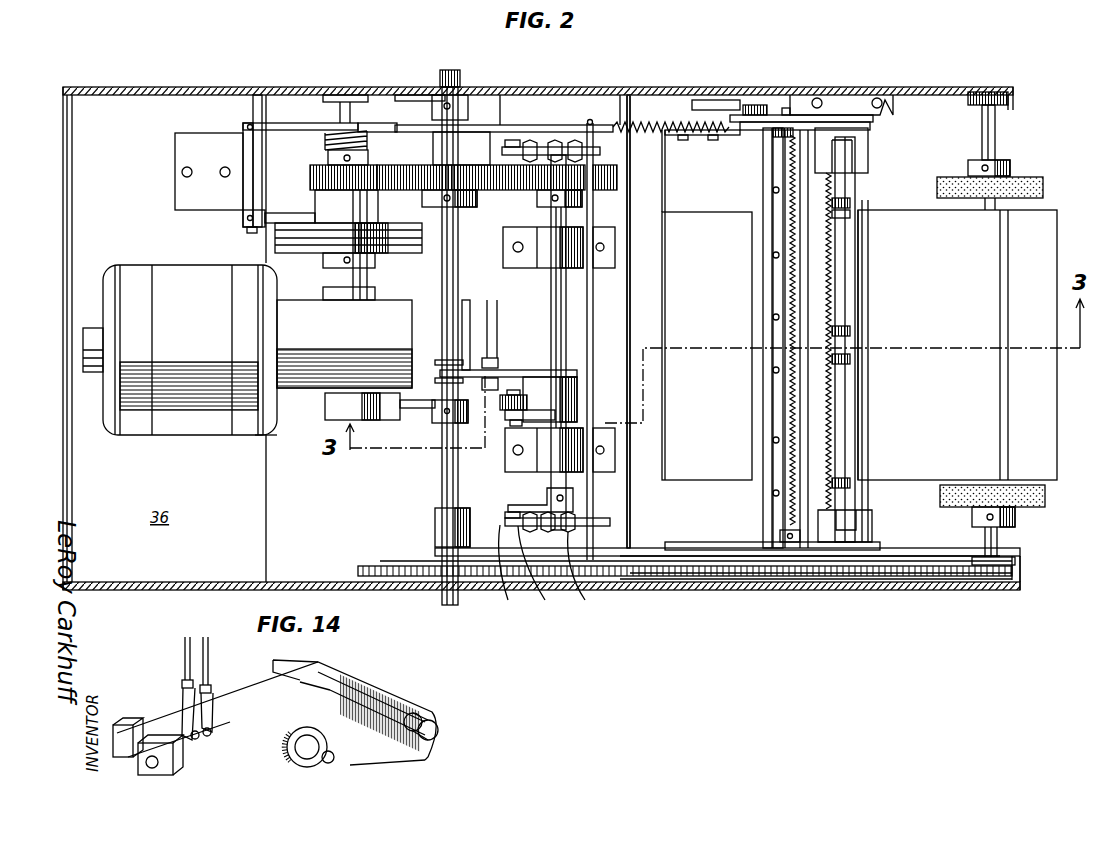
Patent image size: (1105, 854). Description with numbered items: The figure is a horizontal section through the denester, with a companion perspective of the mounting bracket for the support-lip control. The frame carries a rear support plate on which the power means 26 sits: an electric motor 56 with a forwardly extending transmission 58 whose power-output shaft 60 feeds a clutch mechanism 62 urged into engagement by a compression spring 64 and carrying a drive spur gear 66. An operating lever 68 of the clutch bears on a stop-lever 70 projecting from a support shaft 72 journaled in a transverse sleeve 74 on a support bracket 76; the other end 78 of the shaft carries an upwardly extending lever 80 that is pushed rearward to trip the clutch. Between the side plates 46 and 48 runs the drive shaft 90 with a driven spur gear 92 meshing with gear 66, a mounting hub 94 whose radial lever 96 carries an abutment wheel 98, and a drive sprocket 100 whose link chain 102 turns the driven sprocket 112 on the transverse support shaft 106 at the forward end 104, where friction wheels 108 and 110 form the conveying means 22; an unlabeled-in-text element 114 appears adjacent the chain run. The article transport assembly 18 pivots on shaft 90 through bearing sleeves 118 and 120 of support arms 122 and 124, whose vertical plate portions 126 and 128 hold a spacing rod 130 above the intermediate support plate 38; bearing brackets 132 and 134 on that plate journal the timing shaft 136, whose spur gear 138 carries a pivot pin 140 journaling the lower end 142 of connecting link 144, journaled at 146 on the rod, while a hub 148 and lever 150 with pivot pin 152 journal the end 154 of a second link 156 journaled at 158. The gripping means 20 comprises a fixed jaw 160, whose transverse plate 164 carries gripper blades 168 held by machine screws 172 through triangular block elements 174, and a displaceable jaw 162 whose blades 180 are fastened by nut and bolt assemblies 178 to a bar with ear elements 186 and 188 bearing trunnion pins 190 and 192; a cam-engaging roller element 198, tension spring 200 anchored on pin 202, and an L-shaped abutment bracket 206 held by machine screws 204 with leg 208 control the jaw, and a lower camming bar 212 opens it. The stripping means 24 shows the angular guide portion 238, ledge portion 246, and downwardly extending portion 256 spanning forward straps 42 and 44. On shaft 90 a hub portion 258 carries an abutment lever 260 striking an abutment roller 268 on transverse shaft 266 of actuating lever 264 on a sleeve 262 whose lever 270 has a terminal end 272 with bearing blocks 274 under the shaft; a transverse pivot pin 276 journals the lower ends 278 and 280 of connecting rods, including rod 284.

In FIG. 2, the article transport assembly 18 is at (680, 560).
In FIG. 2, the article gripping means 20 is at (868, 189).
In FIG. 2, the article conveying means 22 is at (1051, 190).
In FIG. 2, the article stripping means 24 is at (1066, 226).
In FIG. 2, the power means 26 is at (250, 440).
In FIG. 2, the intermediate support plate 38 is at (630, 200).
In FIG. 2, the forward support strap 42 is at (820, 98).
In FIG. 2, the forward support strap 44 is at (880, 98).
In FIG. 2, the support side plate 46 is at (640, 580).
In FIG. 2, the support side plate 48 is at (580, 95).
In FIG. 2, the electric motor 56 is at (180, 350).
In FIG. 2, the transmission 58 is at (344, 344).
In FIG. 2, the power-output shaft 60 is at (375, 266).
In FIG. 2, the clutch mechanism 62 is at (310, 248).
In FIG. 2, the compression spring 64 is at (367, 142).
In FIG. 2, the drive spur gear 66 is at (310, 175).
In FIG. 2, the operating lever 68 is at (290, 213).
In FIG. 2, the stop-lever 70 is at (243, 216).
In FIG. 2, the support shaft 72 is at (250, 234).
In FIG. 2, the transverse sleeve 74 is at (243, 148).
In FIG. 2, the support bracket 76 is at (197, 142).
In FIG. 2, the other end of shaft 78 is at (256, 95).
In FIG. 2, the upwardly extending lever 80 is at (298, 123).
In FIG. 2, the drive shaft 90 is at (450, 72).
In FIG. 2, the driven spur gear 92 is at (406, 190).
In FIG. 2, the mounting hub 94 is at (468, 105).
In FIG. 2, the radially extending lever 96 is at (410, 95).
In FIG. 2, the abutment wheel 98 is at (385, 132).
In FIG. 2, the drive sprocket 100 is at (408, 578).
In FIG. 2, the endless link chain 102 is at (708, 578).
In FIG. 2, the forward end of support frame 104 is at (1010, 98).
In FIG. 2, the transverse support shaft 106 is at (995, 130).
In FIG. 2, the friction wheel 108 is at (1010, 168).
In FIG. 2, the friction wheel 110 is at (1045, 497).
In FIG. 2, the driven sprocket 112 is at (1020, 556).
In FIG. 2, the rail 114 is at (665, 549).
In FIG. 2, the bearing sleeve 118 is at (435, 520).
In FIG. 2, the bearing sleeve 120 is at (440, 150).
In FIG. 2, the support arm 122 is at (738, 550).
In FIG. 2, the support arm 124 is at (545, 125).
In FIG. 2, the vertical plate portion 126 is at (650, 560).
In FIG. 2, the vertical plate portion 128 is at (628, 110).
In FIG. 2, the spacing rod 130 is at (593, 304).
In FIG. 2, the bearing bracket 132 is at (583, 456).
In FIG. 2, the bearing bracket 134 is at (552, 262).
In FIG. 2, the timing shaft 136 is at (566, 286).
In FIG. 14, the timing shaft 136 is at (432, 722).
In FIG. 2, the spur gear 138 is at (617, 177).
In FIG. 2, the pivot pin 140 is at (510, 175).
In FIG. 2, the lower end of connecting link 142 is at (512, 140).
In FIG. 2, the adjustable connecting link 144 is at (540, 140).
In FIG. 2, the link journal on rod 146 is at (600, 152).
In FIG. 2, the hub 148 is at (573, 500).
In FIG. 2, the radially extending lever 150 is at (515, 512).
In FIG. 2, the pivot pin 152 is at (541, 573).
In FIG. 2, the end of second connecting link 154 is at (514, 573).
In FIG. 2, the second adjustable connecting link 156 is at (584, 576).
In FIG. 2, the second link journal on rod 158 is at (610, 522).
In FIG. 2, the fixed gripping jaw 160 is at (876, 162).
In FIG. 2, the displaceable gripping jaw 162 is at (763, 185).
In FIG. 2, the transverse support plate 164 is at (868, 140).
In FIG. 2, the gripper blade 168 is at (855, 247).
In FIG. 2, the machine screw 172 is at (850, 216).
In FIG. 2, the triangular block element 174 is at (850, 203).
In FIG. 2, the nut and bolt assembly 178 is at (776, 370).
In FIG. 2, the gripping blade 180 is at (776, 255).
In FIG. 2, the support ear element 186 is at (807, 339).
In FIG. 2, the support ear element 188 is at (830, 520).
In FIG. 2, the trunnion pin 190 is at (788, 108).
In FIG. 2, the trunnion pin 192 is at (790, 556).
In FIG. 2, the cam-engaging roller element 198 is at (765, 105).
In FIG. 2, the tension spring 200 is at (655, 123).
In FIG. 2, the pin 202 is at (622, 132).
In FIG. 2, the machine screw 204 is at (690, 140).
In FIG. 2, the L-shaped abutment bracket 206 is at (718, 140).
In FIG. 2, the abutment leg 208 is at (748, 118).
In FIG. 2, the lower camming bar 212 is at (715, 100).
In FIG. 2, the angular guide portion 238 is at (663, 171).
In FIG. 2, the ledge portion 246 is at (840, 292).
In FIG. 2, the downwardly extending portion 256 is at (1050, 395).
In FIG. 2, the hub portion 258 is at (430, 412).
In FIG. 2, the abutment lever 260 is at (432, 412).
In FIG. 2, the sleeve 262 is at (577, 390).
In FIG. 14, the sleeve 262 is at (370, 690).
In FIG. 2, the actuating lever 264 is at (550, 420).
In FIG. 14, the actuating lever 264 is at (400, 752).
In FIG. 2, the transverse shaft 266 is at (512, 426).
In FIG. 14, the transverse shaft 266 is at (334, 760).
In FIG. 2, the abutment roller 268 is at (535, 384).
In FIG. 14, the abutment roller 268 is at (290, 742).
In FIG. 2, the lever 270 is at (535, 361).
In FIG. 2, the terminal end of lever 272 is at (468, 355).
In FIG. 14, the terminal end of lever 272 is at (178, 745).
In FIG. 2, the bearing block 274 is at (440, 372).
In FIG. 14, the bearing block 274 is at (140, 740).
In FIG. 14, the transverse pivot pin 276 is at (208, 740).
In FIG. 2, the lower end of connecting rod 278 is at (492, 358).
In FIG. 14, the lower end of connecting rod 278 is at (183, 642).
In FIG. 14, the lower end of connecting rod 280 is at (214, 700).
In FIG. 2, the connecting rod 284 is at (496, 378).
In FIG. 14, the connecting rod 284 is at (211, 645).